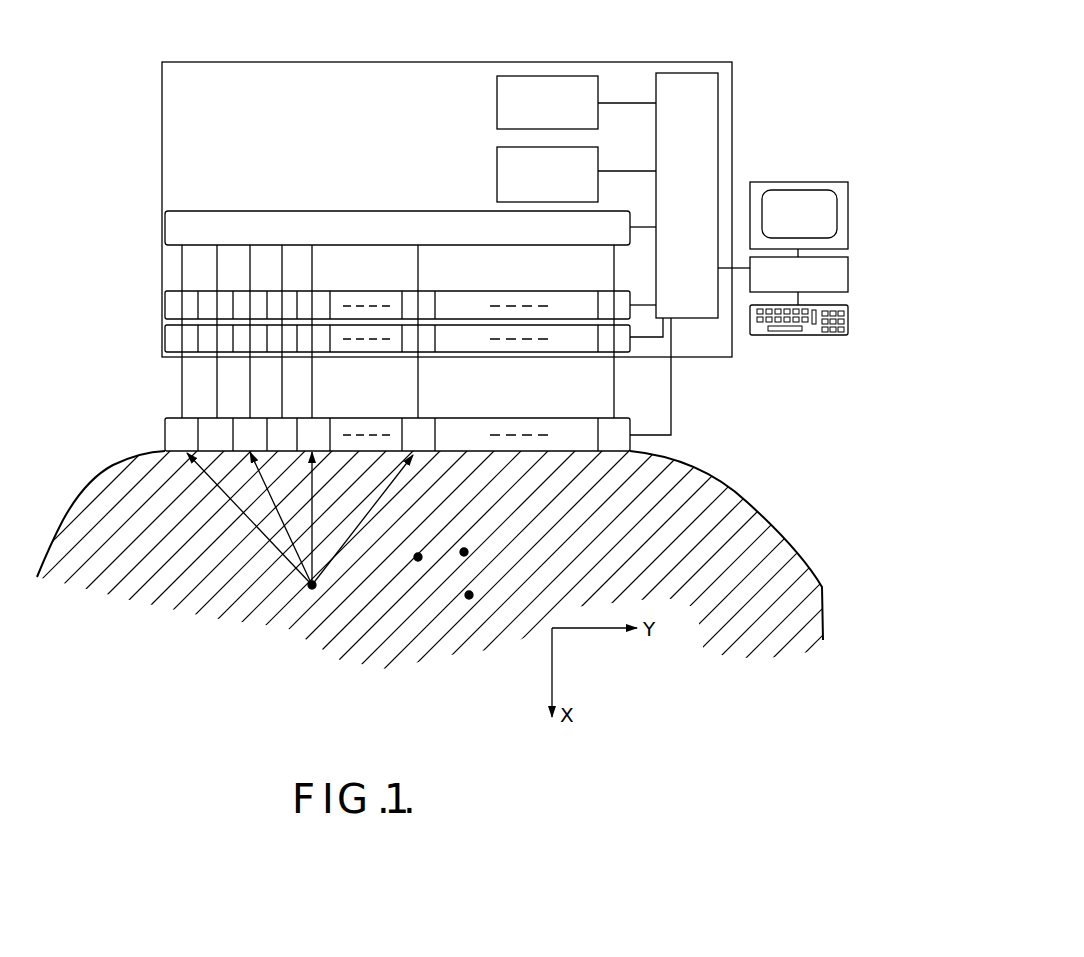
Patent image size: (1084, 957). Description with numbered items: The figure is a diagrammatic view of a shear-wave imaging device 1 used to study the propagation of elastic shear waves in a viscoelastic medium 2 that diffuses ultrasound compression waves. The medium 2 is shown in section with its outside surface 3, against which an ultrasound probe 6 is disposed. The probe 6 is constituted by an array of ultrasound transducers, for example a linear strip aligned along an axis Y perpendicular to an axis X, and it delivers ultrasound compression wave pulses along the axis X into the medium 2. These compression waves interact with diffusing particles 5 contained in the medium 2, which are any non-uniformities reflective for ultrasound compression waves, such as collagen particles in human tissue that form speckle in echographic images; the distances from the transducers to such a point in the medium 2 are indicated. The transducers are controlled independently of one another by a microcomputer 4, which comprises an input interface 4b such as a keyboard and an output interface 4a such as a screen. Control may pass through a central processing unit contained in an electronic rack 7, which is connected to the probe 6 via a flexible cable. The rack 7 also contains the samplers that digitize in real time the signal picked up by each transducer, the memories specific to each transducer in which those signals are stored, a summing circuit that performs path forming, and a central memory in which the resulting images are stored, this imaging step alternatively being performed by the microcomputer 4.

The imaging device 1 is at (758, 112).
The viscoelastic medium 2 is at (118, 497).
The outside surface 3 is at (147, 452).
The microcomputer 4 is at (830, 285).
The output interface 4a is at (797, 182).
The input interface 4b is at (826, 336).
The diffusing particles 5 is at (459, 558).
The ultrasound probe 6 is at (165, 415).
The electronic rack 7 is at (262, 62).